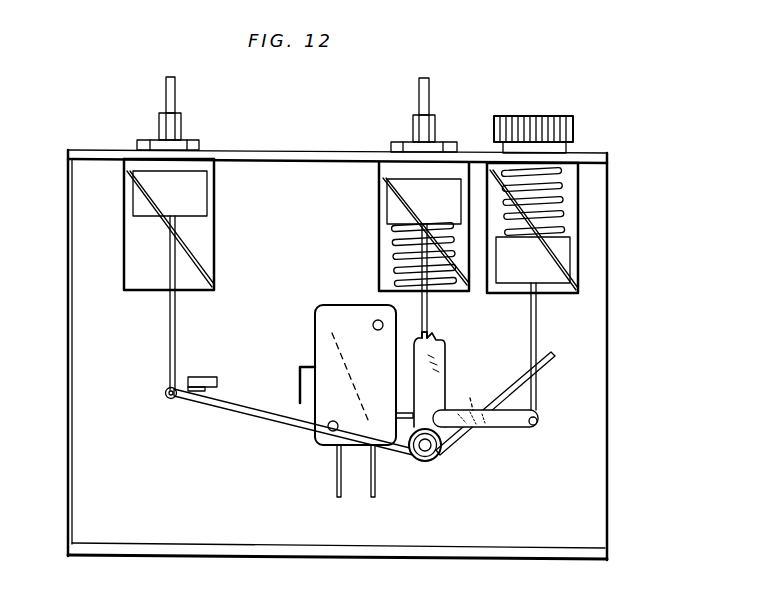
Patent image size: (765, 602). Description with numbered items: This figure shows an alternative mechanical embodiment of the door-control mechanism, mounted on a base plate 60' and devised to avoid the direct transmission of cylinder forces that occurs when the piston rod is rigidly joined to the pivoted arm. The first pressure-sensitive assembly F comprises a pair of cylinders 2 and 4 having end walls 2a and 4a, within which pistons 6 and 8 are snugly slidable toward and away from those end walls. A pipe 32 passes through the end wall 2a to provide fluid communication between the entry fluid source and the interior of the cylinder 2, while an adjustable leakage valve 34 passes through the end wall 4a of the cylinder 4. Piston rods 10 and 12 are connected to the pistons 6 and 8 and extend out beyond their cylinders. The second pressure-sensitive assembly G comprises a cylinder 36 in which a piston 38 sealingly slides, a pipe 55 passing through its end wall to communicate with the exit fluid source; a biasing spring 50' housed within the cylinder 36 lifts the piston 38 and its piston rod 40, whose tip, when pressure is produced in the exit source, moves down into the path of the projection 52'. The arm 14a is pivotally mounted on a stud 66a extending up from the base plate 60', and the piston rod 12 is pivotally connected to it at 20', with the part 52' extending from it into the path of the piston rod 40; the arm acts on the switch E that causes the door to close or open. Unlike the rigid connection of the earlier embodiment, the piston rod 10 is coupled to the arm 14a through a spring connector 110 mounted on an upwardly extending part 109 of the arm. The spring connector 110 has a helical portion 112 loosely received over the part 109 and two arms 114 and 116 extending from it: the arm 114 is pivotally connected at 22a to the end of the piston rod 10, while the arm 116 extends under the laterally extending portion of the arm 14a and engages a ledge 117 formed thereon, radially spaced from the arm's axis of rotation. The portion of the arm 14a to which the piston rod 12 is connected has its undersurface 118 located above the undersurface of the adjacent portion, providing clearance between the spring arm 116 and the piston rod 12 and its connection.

The cylinder 2 is at (215, 233).
The end wall 2a is at (202, 160).
The cylinder 4 is at (578, 183).
The end wall 4a is at (567, 163).
The piston 6 is at (198, 192).
The piston 8 is at (568, 253).
The piston rod 10 is at (167, 322).
The piston rod 12 is at (538, 311).
The arm 14a is at (449, 362).
The pivotal connection 20' is at (542, 443).
The pivotal connection 22a is at (168, 402).
The pipe 32 is at (166, 88).
The adjustable leakage valve 34 is at (572, 117).
The cylinder 36 is at (378, 203).
The piston 38 is at (407, 180).
The piston rod 40 is at (428, 311).
The biasing spring 50' is at (392, 254).
The projection 52' is at (461, 322).
The pipe 55 is at (430, 92).
The base plate 60' is at (363, 355).
The stud 66a is at (432, 458).
The upwardly extending part 109 is at (422, 455).
The spring connector 110 is at (447, 452).
The helical portion 112 is at (428, 428).
The spring arm 114 is at (250, 422).
The spring arm 116 is at (513, 382).
The ledge 117 is at (471, 400).
The undersurface 118 is at (517, 428).
The switch E is at (338, 303).
The first pressure-sensitive assembly F is at (118, 225).
The second pressure-sensitive assembly G is at (372, 217).